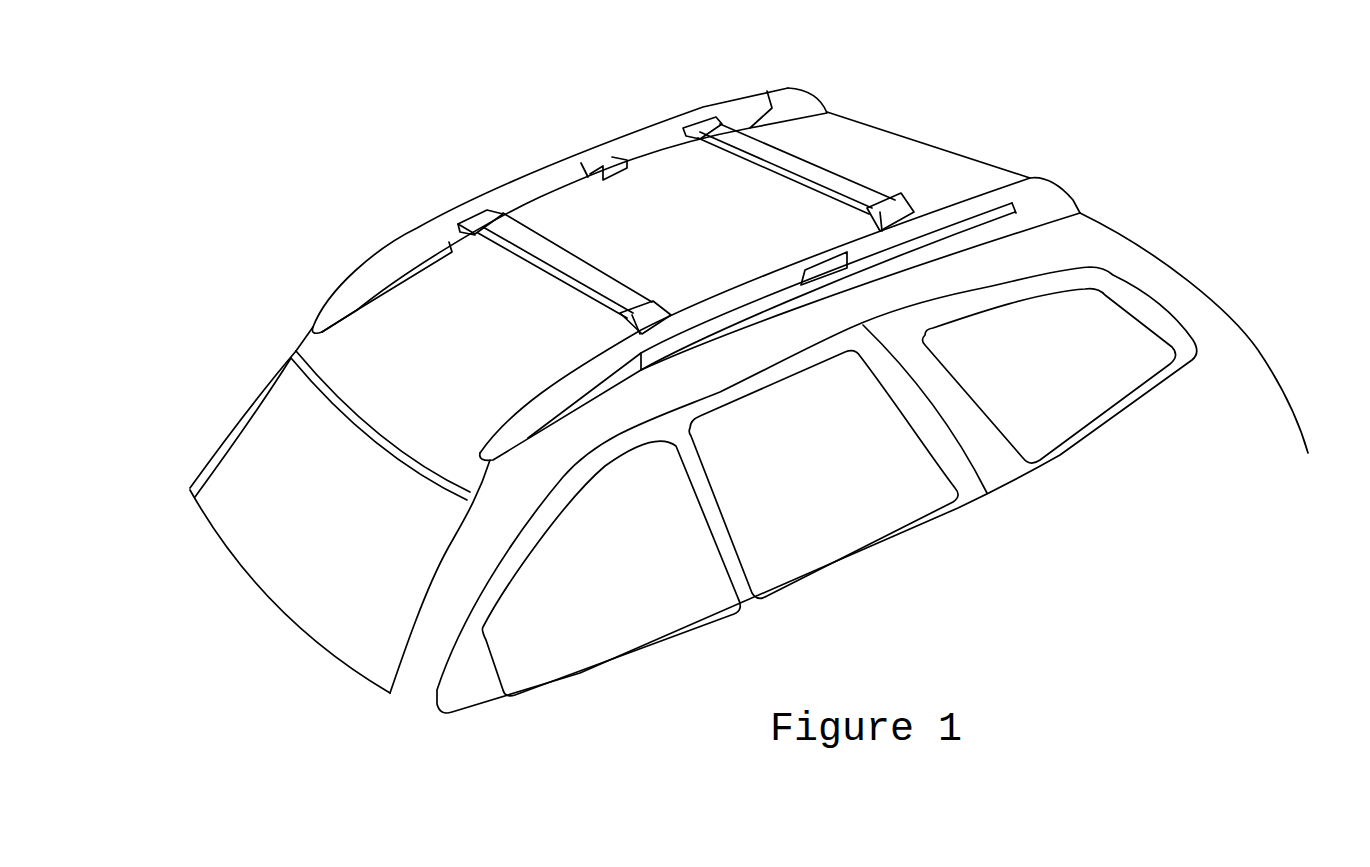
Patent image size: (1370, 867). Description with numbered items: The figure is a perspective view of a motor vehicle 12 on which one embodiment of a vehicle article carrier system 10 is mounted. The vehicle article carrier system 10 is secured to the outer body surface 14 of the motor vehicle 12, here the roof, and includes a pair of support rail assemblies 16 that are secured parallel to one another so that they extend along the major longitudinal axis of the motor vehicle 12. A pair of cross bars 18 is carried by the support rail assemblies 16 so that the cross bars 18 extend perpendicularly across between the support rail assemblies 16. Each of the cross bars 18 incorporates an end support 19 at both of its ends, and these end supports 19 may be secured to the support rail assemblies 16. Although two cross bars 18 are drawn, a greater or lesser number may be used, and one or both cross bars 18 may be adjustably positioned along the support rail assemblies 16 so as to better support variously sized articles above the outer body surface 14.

The vehicle article carrier system 10 is at (730, 86).
The motor vehicle 12 is at (937, 119).
The outer body surface 14 is at (962, 163).
The support rail assemblies 16 is at (560, 158).
The cross bars 18 is at (557, 275).
The end support 19 is at (478, 222).